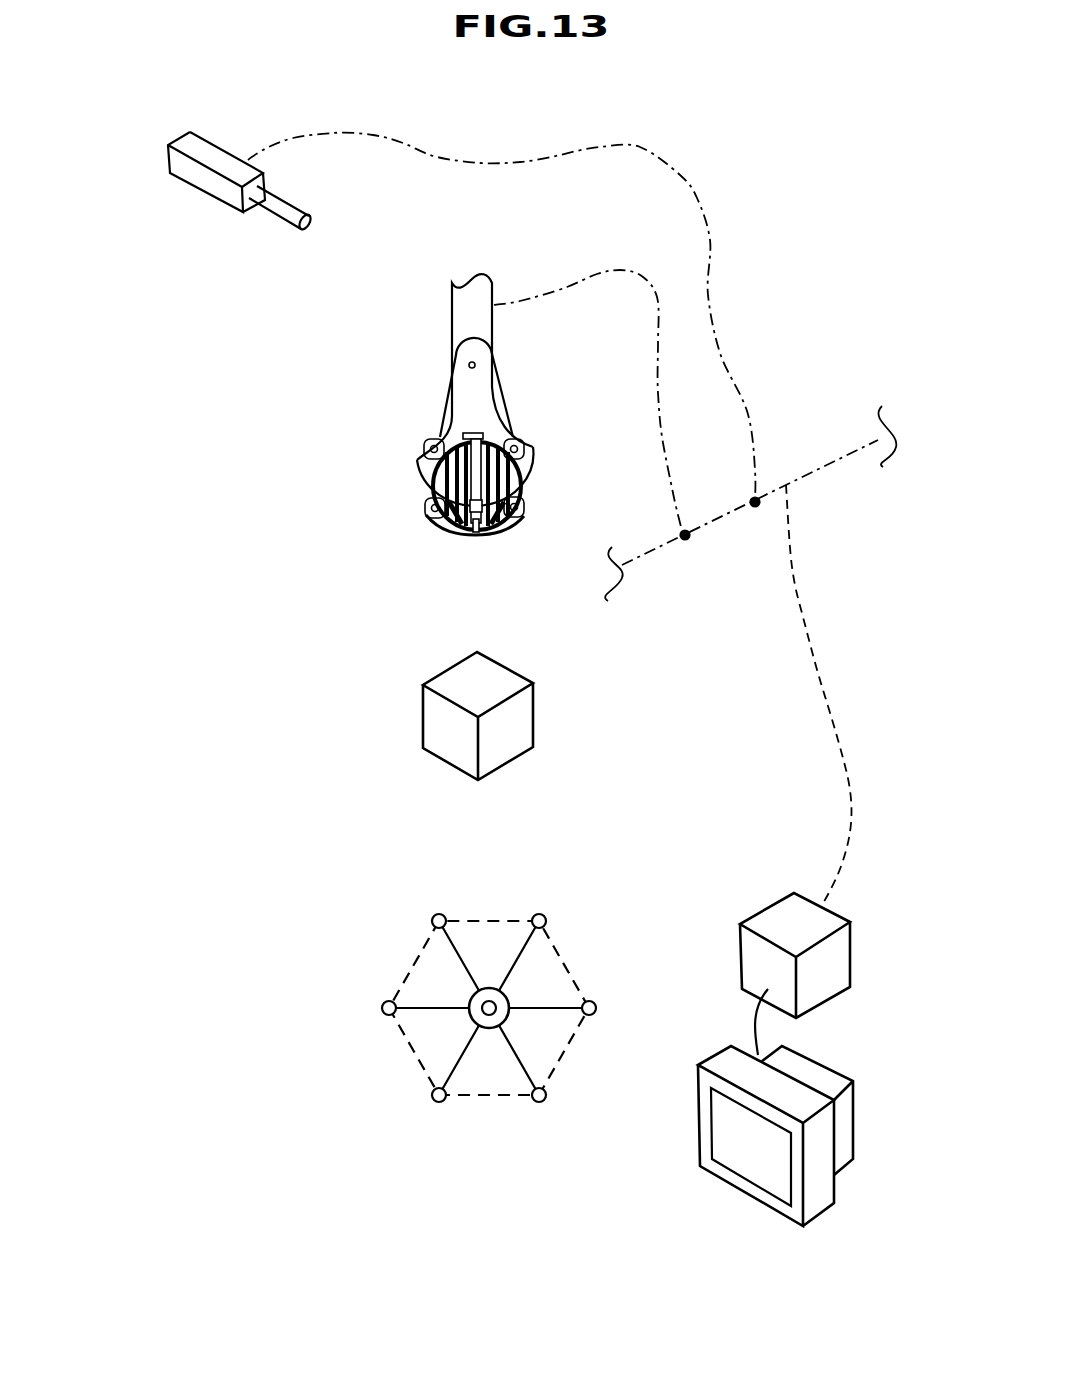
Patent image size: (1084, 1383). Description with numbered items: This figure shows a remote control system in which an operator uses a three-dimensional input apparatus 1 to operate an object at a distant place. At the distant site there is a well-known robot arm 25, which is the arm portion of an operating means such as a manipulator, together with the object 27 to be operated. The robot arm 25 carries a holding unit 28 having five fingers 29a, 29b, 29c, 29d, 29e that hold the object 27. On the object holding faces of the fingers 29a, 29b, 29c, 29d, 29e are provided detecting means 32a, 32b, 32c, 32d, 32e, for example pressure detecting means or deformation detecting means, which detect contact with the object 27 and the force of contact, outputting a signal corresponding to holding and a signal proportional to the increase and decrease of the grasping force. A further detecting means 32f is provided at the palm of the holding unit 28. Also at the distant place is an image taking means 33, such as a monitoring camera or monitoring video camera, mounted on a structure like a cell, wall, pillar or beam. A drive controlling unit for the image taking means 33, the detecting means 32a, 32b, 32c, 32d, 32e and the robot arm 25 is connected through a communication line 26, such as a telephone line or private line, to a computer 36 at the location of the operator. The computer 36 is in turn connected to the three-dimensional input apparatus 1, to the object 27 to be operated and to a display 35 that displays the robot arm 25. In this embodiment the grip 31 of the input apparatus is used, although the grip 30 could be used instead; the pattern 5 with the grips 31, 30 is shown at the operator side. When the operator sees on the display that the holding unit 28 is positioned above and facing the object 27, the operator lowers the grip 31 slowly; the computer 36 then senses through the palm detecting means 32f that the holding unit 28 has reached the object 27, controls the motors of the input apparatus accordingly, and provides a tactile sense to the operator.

The three-dimensional input apparatus 1 is at (392, 1063).
The marker pattern 5 is at (414, 989).
The robot arm 25 is at (512, 284).
The communication line 26 is at (827, 405).
The object to be operated 27 is at (560, 696).
The holding unit 28 is at (442, 427).
The finger 29a is at (423, 470).
The finger 29b is at (437, 496).
The finger 29c is at (482, 447).
The finger 29d is at (502, 470).
The finger 29e is at (528, 478).
The grip 30 is at (489, 1008).
The grip 31 is at (480, 996).
The detecting means 32a is at (447, 522).
The detecting means 32b is at (466, 534).
The detecting means 32c is at (479, 528).
The detecting means 32d is at (517, 493).
The detecting means 32e is at (523, 518).
The detecting means 32f is at (473, 433).
The image taking means 33 is at (176, 206).
The display 35 is at (697, 1105).
The computer 36 is at (758, 912).